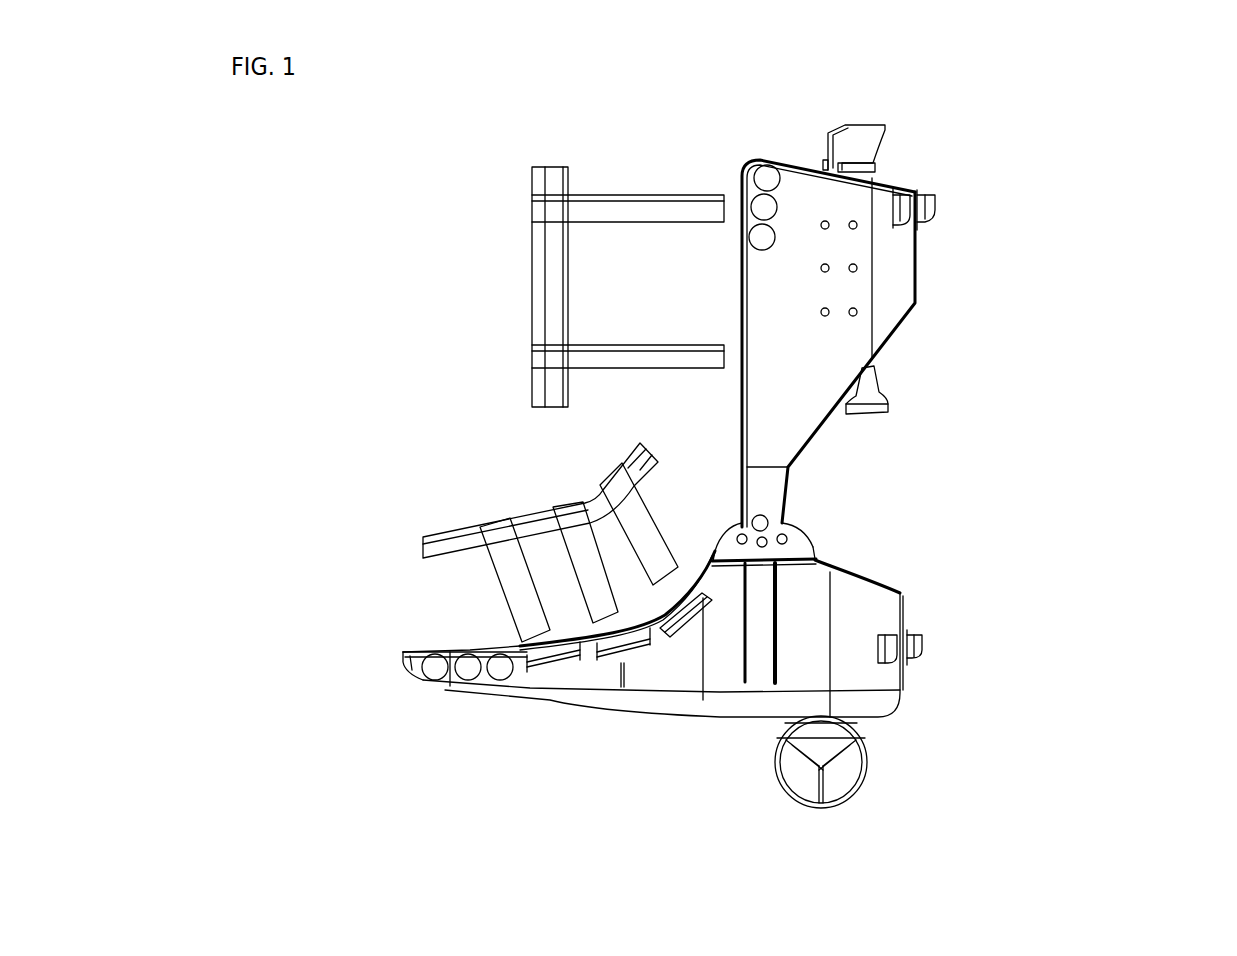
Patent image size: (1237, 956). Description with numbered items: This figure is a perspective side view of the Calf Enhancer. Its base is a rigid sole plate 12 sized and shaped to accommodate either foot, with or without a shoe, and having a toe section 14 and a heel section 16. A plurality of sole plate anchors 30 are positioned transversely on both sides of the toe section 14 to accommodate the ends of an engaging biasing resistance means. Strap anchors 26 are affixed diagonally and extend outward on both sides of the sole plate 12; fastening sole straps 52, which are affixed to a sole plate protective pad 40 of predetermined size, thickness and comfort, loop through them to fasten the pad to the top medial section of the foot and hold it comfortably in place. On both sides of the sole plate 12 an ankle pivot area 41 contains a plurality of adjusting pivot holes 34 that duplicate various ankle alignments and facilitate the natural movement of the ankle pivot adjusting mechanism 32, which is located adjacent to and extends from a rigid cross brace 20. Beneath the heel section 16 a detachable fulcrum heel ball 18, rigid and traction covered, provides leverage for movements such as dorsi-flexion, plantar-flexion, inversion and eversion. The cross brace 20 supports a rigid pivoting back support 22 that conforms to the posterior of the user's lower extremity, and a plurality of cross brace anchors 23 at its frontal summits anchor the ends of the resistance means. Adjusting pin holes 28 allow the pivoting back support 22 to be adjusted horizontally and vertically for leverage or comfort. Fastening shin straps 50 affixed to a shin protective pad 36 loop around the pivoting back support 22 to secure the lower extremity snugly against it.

The sole plate 12 is at (663, 676).
The toe section 14 is at (403, 668).
The heel section 16 is at (902, 682).
The heel ball 18 is at (875, 769).
The cross brace 20 is at (893, 263).
The pivoting back support 22 is at (887, 143).
The cross brace anchors 23 is at (748, 204).
The strap anchors 26 is at (590, 635).
The adjusting pin holes 28 is at (830, 316).
The sole plate anchors 30 is at (467, 681).
The ankle pivot adjusting mechanism 32 is at (762, 522).
The adjusting pivot holes 34 is at (784, 541).
The shin protective pad 36 is at (533, 272).
The sole plate protective pad 40 is at (588, 492).
The ankle pivot area 41 is at (788, 526).
The fastening shin straps 50 is at (578, 355).
The fastening sole straps 52 is at (500, 537).